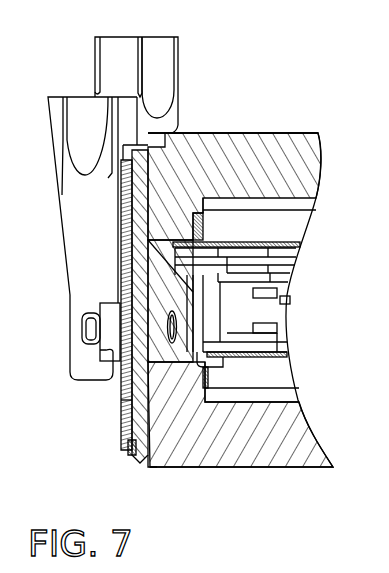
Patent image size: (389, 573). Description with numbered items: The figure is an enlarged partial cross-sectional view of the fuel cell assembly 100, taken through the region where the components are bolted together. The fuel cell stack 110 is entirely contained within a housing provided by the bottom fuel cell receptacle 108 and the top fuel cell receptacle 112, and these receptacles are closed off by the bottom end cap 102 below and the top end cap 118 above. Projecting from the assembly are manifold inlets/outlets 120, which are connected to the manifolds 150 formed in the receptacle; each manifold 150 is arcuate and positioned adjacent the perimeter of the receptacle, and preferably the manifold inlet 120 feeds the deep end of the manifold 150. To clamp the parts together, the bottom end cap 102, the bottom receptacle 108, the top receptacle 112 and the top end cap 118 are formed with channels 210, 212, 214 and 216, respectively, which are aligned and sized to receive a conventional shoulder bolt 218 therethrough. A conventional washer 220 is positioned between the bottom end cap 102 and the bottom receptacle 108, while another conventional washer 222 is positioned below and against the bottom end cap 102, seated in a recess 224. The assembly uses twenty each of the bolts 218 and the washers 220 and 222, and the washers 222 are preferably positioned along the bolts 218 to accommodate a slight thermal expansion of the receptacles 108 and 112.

The fuel cell assembly 100 is at (206, 78).
The bottom end cap 102 is at (220, 452).
The bottom fuel cell receptacle 108 is at (206, 384).
The fuel cell stack 110 is at (296, 300).
The top fuel cell receptacle 112 is at (182, 254).
The top end cap 118 is at (206, 138).
The manifold inlet/outlet 120 is at (118, 37).
The manifold 150 is at (188, 232).
The channel 210 is at (128, 408).
The channel 212 is at (128, 340).
The channel 214 is at (137, 267).
The channel 216 is at (128, 212).
The shoulder bolt 218 is at (140, 198).
The washer 220 is at (87, 352).
The washer 222 is at (118, 444).
The recess 224 is at (144, 474).